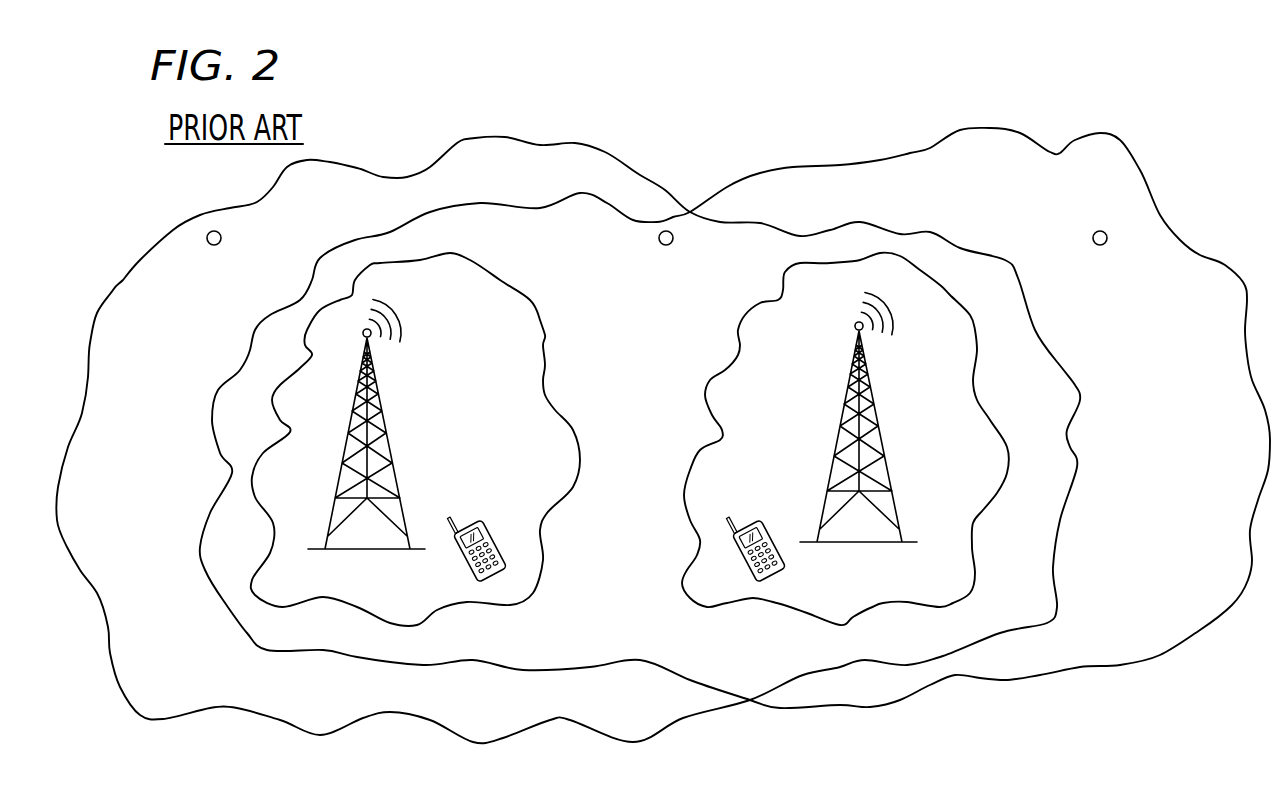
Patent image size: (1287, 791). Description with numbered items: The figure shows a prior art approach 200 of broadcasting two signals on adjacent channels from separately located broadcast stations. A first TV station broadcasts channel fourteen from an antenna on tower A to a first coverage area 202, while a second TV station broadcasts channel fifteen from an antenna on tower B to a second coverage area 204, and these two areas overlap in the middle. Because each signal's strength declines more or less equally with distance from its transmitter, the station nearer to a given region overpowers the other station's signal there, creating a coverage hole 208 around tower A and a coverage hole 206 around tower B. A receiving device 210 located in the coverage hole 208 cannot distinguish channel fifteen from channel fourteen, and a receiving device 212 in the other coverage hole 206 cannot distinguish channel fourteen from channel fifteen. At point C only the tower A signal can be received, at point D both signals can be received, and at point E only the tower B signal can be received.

The prior art approach 200 is at (1196, 152).
The first coverage area 202 is at (113, 655).
The second coverage area 204 is at (1202, 633).
The coverage hole 206 is at (707, 381).
The coverage hole 208 is at (548, 345).
The receiving device 210 is at (484, 580).
The receiving device 212 is at (762, 584).